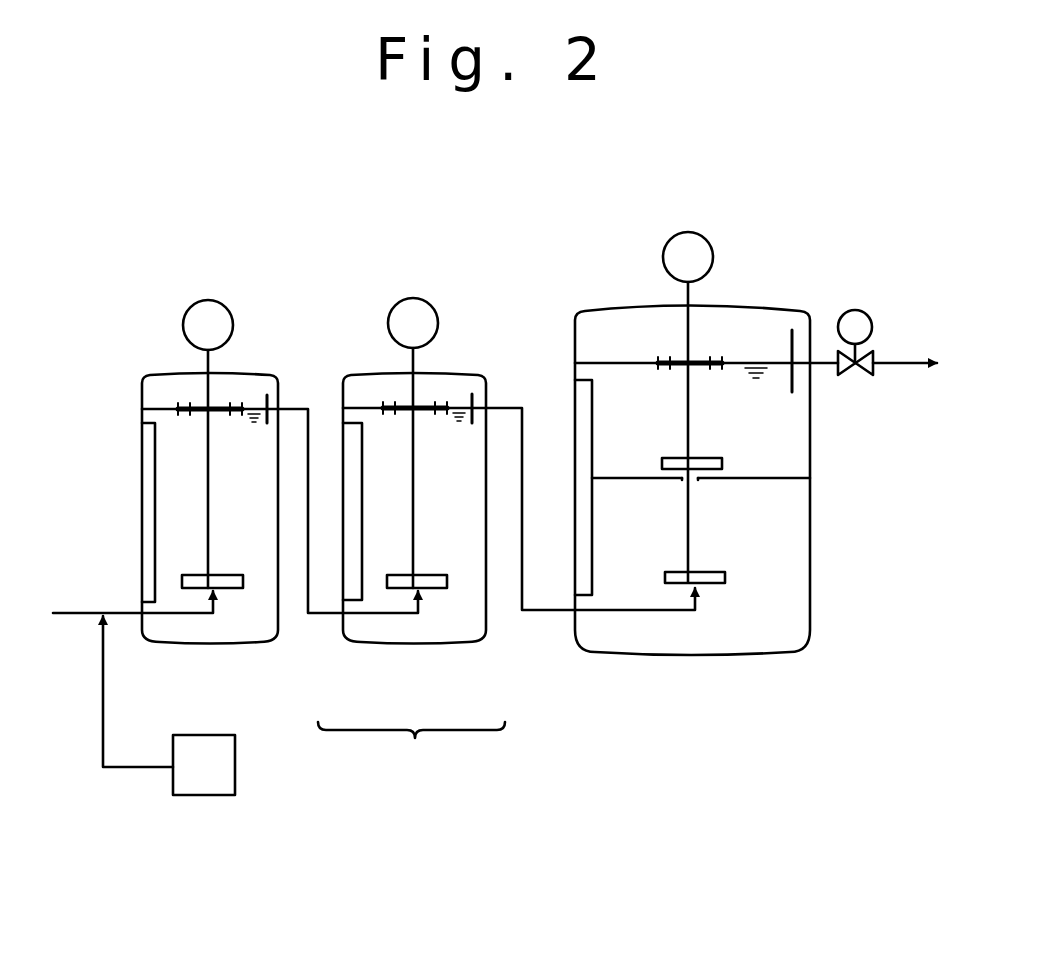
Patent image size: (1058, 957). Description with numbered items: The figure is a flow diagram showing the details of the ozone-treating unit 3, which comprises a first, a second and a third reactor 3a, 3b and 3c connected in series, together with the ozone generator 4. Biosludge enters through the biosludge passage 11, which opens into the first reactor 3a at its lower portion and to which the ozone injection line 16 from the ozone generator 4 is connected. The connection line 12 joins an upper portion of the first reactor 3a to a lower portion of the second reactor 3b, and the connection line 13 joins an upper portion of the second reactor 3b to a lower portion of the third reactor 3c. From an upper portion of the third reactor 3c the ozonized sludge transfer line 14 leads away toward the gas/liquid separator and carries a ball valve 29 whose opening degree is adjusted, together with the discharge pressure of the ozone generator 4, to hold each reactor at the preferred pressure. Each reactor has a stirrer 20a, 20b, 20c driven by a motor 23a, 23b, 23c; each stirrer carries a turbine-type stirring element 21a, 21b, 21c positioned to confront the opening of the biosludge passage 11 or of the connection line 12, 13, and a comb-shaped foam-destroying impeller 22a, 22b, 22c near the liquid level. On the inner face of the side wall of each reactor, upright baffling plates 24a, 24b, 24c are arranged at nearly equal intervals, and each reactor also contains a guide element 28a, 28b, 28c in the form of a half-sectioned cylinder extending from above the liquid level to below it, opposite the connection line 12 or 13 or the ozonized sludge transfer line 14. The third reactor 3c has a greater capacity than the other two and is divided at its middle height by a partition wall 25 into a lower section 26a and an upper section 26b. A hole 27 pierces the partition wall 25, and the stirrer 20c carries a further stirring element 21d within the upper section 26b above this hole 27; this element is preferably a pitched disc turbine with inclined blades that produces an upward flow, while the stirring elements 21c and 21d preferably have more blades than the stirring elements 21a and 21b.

The ozone-treating unit 3 is at (411, 752).
The first reactor 3a is at (262, 640).
The second reactor 3b is at (415, 643).
The third reactor 3c is at (600, 650).
The ozone generator 4 is at (236, 796).
The biosludge passage 11 is at (72, 611).
The connection line 12 is at (292, 405).
The connection line 13 is at (510, 405).
The ozonized sludge transfer line 14 is at (893, 360).
The ozone injection line 16 is at (130, 770).
The stirrer 20a is at (208, 452).
The stirrer 20b is at (440, 463).
The stirrer 20c is at (697, 482).
The stirring element 21a is at (233, 592).
The stirring element 21b is at (437, 589).
The stirring element 21c is at (725, 583).
The further stirring element 21d is at (705, 455).
The foam-destroying impeller 22a is at (183, 402).
The foam-destroying impeller 22b is at (432, 400).
The foam-destroying impeller 22c is at (665, 356).
The motor 23a is at (208, 300).
The motor 23b is at (413, 298).
The motor 23c is at (688, 232).
The baffling plates 24a is at (150, 506).
The baffling plates 24b is at (355, 540).
The baffling plates 24c is at (592, 548).
The partition wall 25 is at (790, 478).
The section 26a is at (675, 637).
The section 26b is at (793, 450).
The hole 27 is at (697, 540).
The guide element 28a is at (265, 398).
The guide element 28b is at (470, 398).
The guide element 28c is at (788, 350).
The ball valve 29 is at (855, 310).